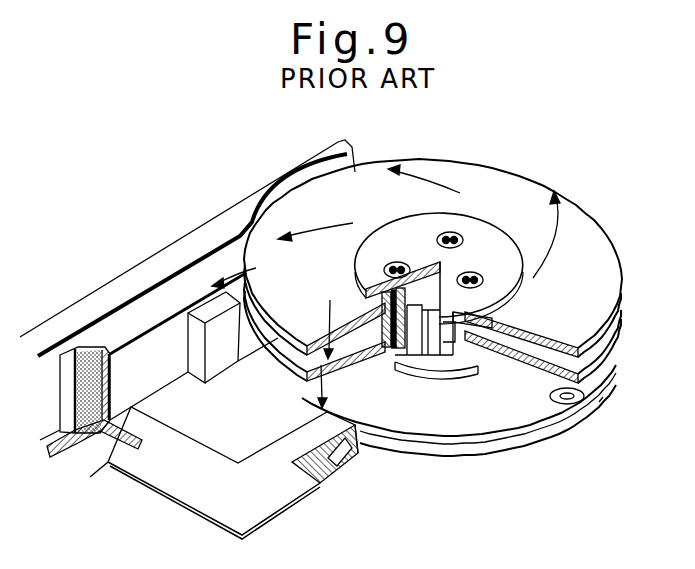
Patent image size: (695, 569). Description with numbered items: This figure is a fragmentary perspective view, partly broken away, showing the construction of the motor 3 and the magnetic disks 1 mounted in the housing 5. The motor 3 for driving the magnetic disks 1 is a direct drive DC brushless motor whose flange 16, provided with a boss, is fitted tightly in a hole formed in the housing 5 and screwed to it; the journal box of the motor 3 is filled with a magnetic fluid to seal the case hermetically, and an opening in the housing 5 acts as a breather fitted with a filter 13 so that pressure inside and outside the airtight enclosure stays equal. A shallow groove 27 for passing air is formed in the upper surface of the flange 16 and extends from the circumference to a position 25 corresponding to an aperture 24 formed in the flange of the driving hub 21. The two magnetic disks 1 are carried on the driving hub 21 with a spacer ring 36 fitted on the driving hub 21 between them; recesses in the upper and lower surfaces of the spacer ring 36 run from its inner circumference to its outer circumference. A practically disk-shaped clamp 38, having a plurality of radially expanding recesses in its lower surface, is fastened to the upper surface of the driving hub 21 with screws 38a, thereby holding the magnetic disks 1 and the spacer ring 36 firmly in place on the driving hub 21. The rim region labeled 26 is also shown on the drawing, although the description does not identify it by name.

The magnetic disks 1 is at (612, 325).
The motor 3 is at (503, 460).
The housing 5 is at (232, 208).
The filter 13 is at (85, 353).
The flange 16 is at (530, 407).
The driving hub 21 is at (418, 368).
The aperture 24 is at (382, 357).
The position 25 is at (393, 364).
The turntable rim 26 is at (457, 443).
The shallow groove 27 is at (378, 425).
The spacer ring 36 is at (463, 340).
The clamp 38 is at (523, 278).
The screws 38a is at (462, 233).